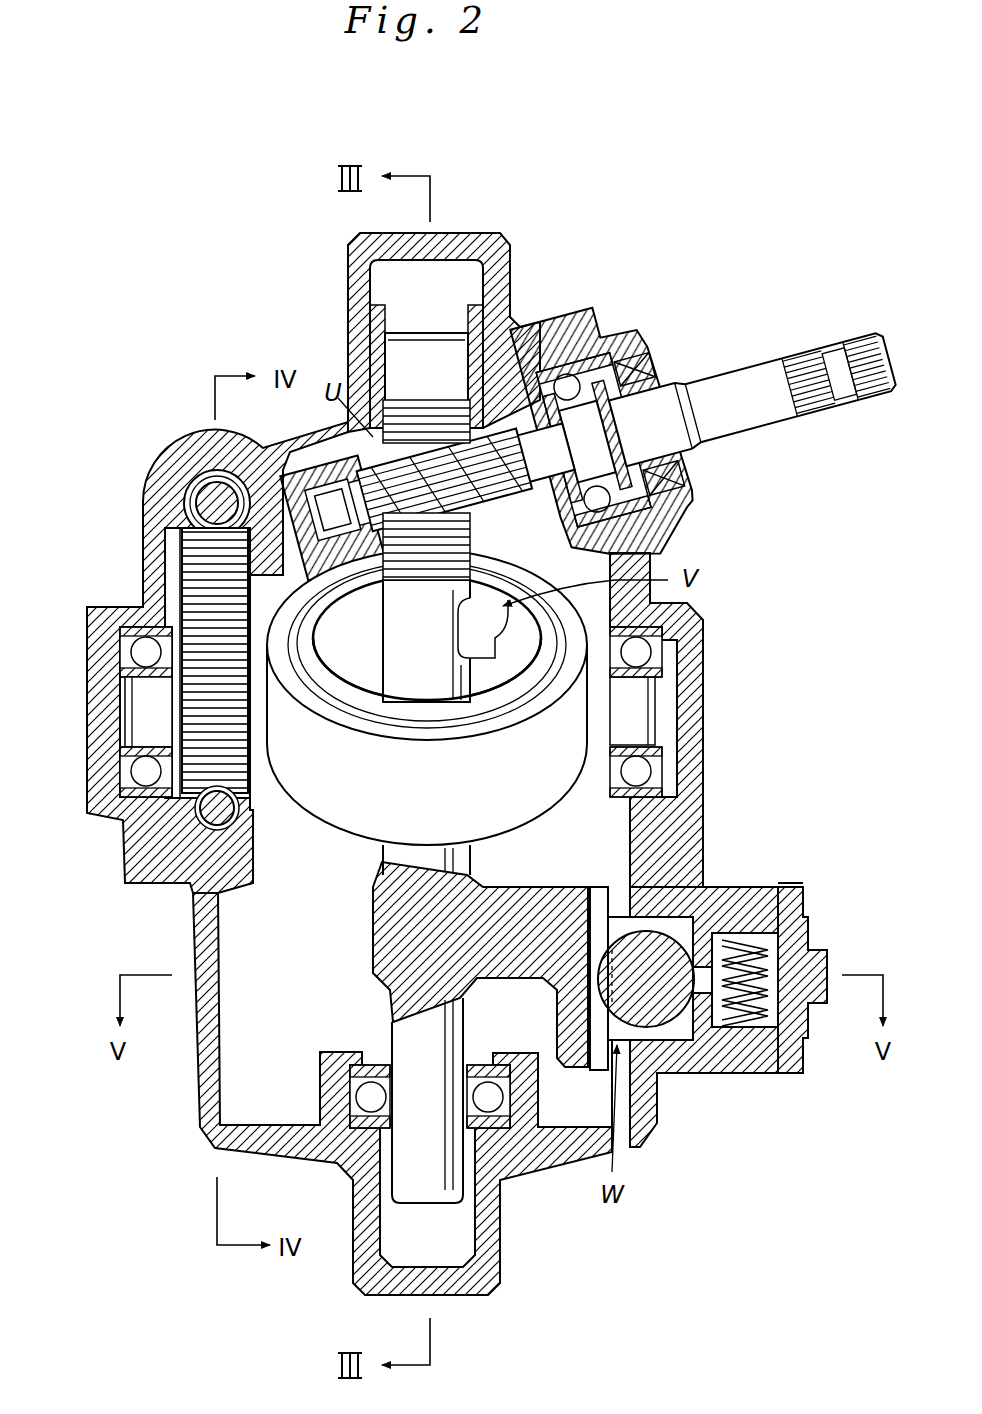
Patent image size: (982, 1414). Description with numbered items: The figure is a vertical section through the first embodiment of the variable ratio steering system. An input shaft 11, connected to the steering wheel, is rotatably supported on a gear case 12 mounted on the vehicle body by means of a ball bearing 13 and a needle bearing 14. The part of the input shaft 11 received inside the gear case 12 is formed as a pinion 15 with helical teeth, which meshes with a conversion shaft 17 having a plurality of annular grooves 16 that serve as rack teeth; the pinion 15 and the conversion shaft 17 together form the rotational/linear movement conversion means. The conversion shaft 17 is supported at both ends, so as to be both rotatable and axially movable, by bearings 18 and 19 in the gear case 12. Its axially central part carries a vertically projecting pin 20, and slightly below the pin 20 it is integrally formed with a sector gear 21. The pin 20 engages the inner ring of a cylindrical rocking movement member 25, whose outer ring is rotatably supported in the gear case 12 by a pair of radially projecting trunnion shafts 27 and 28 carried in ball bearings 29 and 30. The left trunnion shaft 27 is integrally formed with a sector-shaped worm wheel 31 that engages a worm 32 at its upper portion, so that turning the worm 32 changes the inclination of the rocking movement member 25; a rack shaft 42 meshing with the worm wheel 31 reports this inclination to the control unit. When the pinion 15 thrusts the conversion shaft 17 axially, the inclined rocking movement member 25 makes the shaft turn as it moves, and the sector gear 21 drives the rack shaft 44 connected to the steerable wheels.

The input shaft 11 is at (740, 380).
The gear case 12 is at (693, 633).
The ball bearing 13 is at (604, 340).
The needle bearing 14 is at (320, 486).
The pinion 15 is at (507, 425).
The annular grooves 16 is at (465, 538).
The conversion shaft 17 is at (384, 641).
The bearing 18 is at (375, 322).
The bearing 19 is at (488, 1128).
The pin 20 is at (483, 683).
The sector gear 21 is at (600, 902).
The rocking movement member 25 is at (337, 823).
The trunnion shaft 27 is at (137, 712).
The trunnion shaft 28 is at (652, 703).
The ball bearing 29 is at (140, 771).
The ball bearing 30 is at (648, 772).
The worm wheel 31 is at (187, 560).
The worm 32 is at (187, 497).
The rack shaft 42 is at (142, 838).
The rack shaft 44 is at (670, 1013).